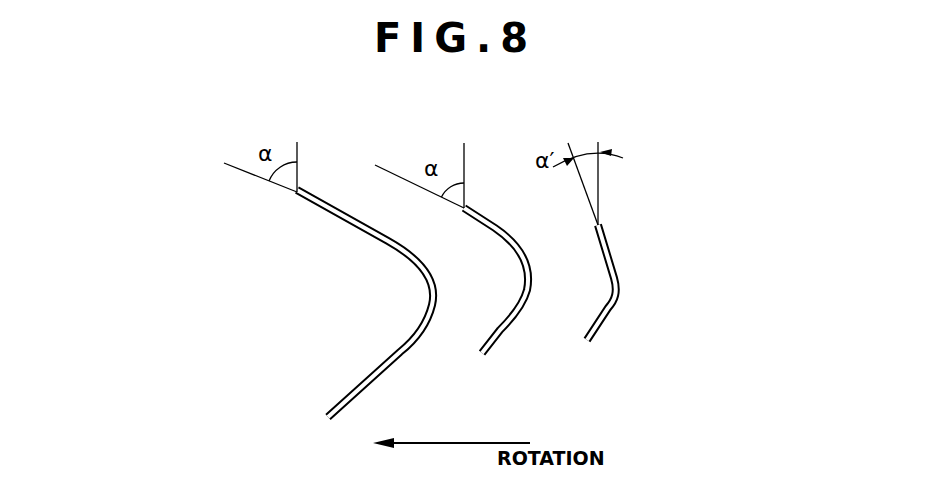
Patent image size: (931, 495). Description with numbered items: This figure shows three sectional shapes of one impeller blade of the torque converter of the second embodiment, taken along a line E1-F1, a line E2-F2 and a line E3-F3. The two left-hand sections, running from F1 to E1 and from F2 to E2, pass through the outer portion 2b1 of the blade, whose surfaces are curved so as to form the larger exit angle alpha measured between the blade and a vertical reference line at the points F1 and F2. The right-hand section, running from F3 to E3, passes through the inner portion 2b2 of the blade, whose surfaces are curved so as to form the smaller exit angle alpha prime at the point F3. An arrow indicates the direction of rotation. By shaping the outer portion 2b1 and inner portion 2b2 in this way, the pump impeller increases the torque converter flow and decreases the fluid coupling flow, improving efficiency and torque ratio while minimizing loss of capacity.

The outer portion 2b1 is at (355, 228).
The inner portion 2b2 is at (620, 280).
The section line point F1 is at (276, 207).
The section line point E1 is at (303, 421).
The section line point F2 is at (440, 221).
The section line point E2 is at (464, 368).
The section line point F3 is at (572, 231).
The section line point E3 is at (570, 357).